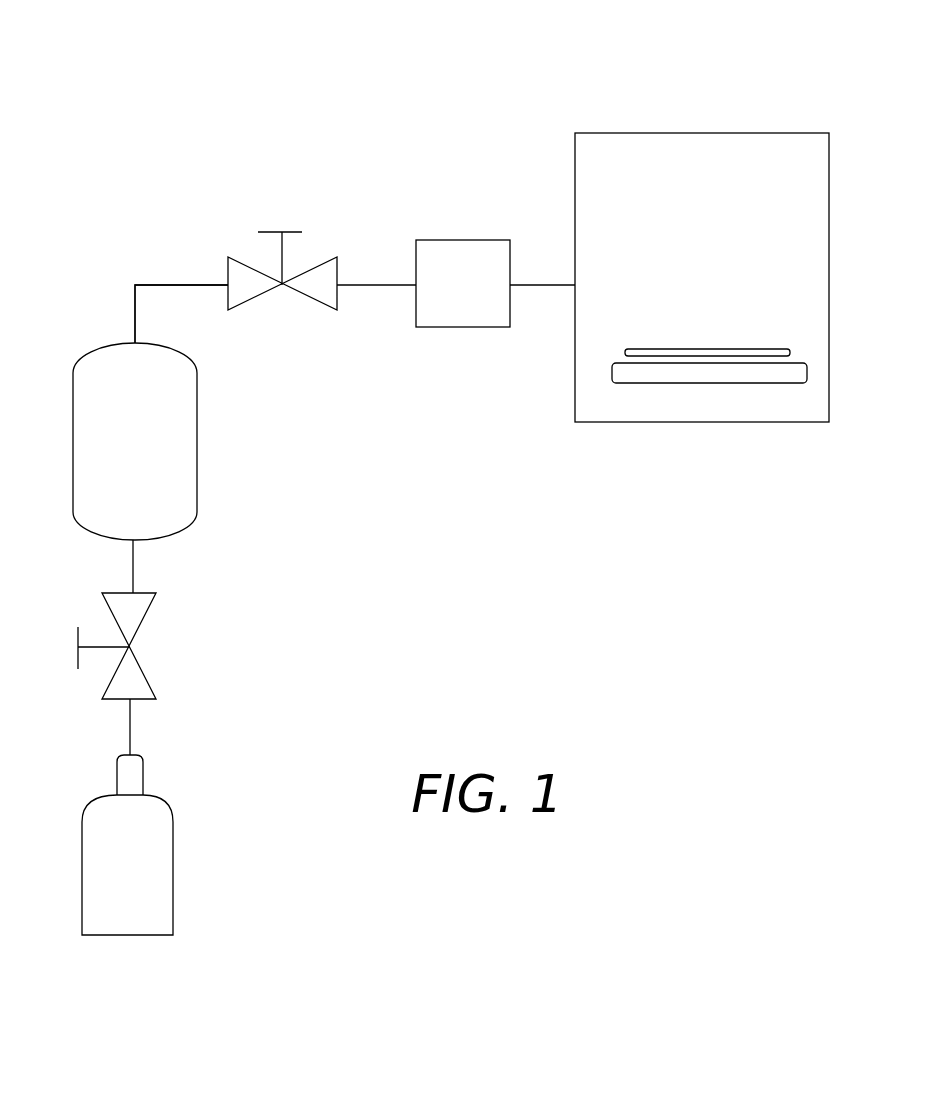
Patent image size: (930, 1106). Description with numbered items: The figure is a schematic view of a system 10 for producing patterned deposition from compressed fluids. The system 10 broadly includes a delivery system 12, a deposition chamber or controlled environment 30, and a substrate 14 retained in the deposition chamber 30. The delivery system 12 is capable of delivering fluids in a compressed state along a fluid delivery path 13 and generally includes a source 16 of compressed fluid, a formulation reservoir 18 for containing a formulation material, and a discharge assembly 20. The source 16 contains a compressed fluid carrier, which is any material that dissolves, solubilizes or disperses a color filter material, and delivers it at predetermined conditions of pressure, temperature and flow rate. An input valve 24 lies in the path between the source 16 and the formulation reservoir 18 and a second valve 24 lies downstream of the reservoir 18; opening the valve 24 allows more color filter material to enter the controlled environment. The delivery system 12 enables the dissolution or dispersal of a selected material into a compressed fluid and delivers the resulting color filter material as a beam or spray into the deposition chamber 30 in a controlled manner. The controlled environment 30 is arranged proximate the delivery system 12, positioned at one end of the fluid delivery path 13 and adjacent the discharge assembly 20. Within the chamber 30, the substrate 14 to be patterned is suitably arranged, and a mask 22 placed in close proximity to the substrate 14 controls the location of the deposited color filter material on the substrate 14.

The system 10 is at (322, 116).
The delivery system 12 is at (122, 264).
The fluid delivery path 13 is at (134, 315).
The substrate 14 is at (656, 387).
The source of compressed fluid 16 is at (173, 850).
The formulation reservoir 18 is at (197, 465).
The discharge assembly 20 is at (478, 240).
The mask 22 is at (733, 349).
The input valve 24 is at (228, 258).
The deposition chamber 30 is at (708, 133).